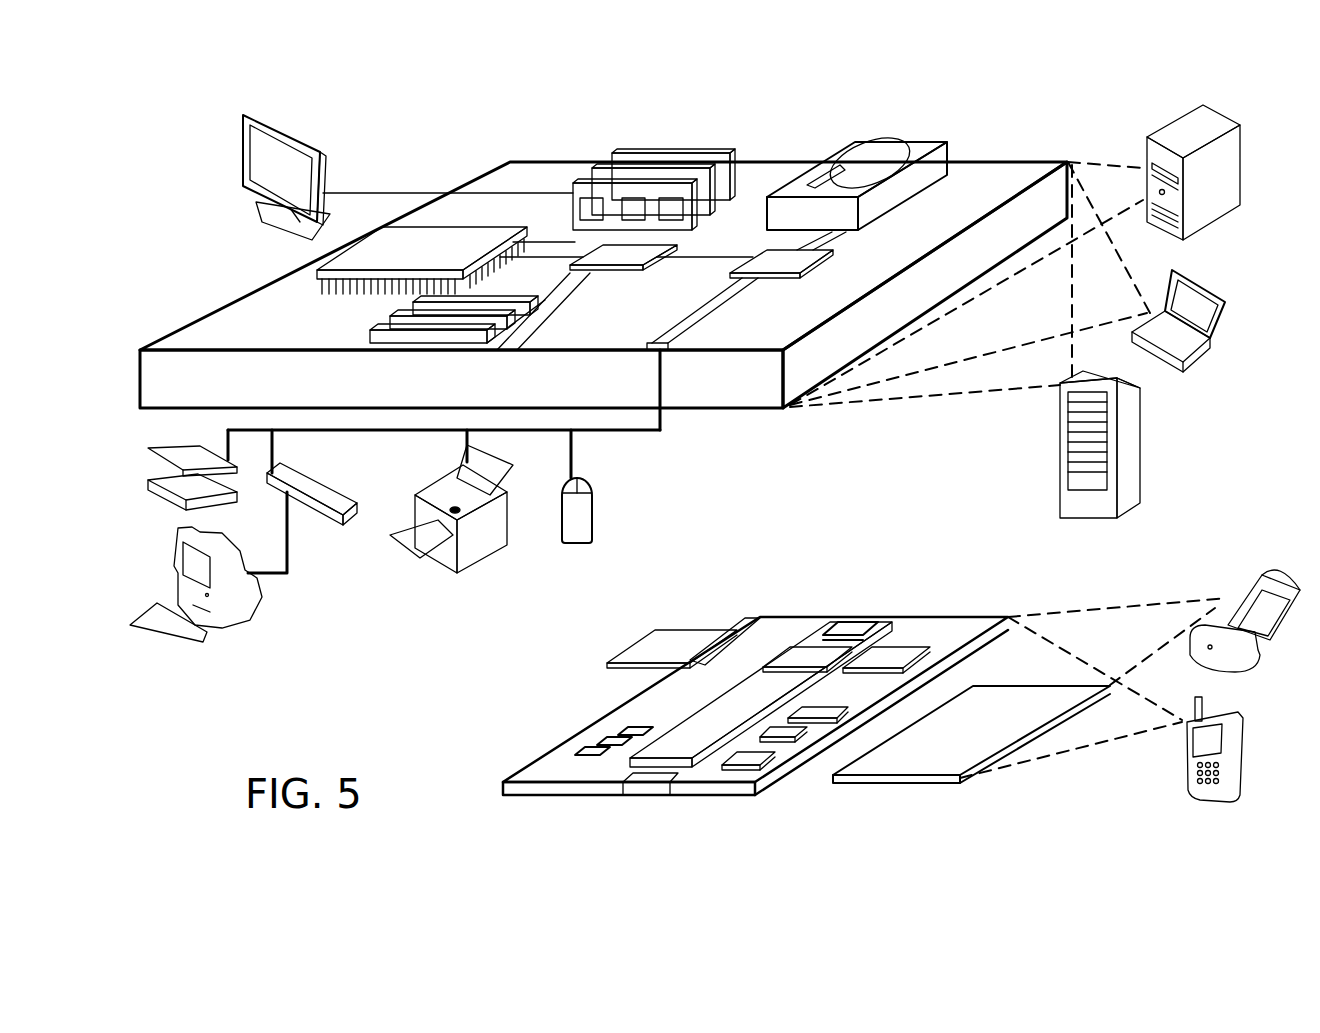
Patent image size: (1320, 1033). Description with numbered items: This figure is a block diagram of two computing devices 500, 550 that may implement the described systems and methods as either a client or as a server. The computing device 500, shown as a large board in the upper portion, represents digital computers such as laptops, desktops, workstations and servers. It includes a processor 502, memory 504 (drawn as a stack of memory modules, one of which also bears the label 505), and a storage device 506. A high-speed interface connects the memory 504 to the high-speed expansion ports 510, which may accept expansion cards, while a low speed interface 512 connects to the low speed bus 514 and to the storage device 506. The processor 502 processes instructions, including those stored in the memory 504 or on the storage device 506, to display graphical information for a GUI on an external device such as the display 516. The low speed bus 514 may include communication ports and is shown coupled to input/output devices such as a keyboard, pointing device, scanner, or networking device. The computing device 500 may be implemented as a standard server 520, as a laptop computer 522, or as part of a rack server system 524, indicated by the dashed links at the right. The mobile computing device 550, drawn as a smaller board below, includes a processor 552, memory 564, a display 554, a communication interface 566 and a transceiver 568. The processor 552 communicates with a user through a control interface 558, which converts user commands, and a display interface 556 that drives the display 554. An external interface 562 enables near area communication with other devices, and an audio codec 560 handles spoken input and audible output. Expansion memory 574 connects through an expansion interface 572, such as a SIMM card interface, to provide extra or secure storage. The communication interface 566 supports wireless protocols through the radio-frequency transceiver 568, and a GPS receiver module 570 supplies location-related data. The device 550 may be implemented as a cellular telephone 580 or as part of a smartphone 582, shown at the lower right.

The computing device 500 is at (478, 132).
The processor 502 is at (313, 282).
The memory 504 is at (640, 153).
The memory module 505 is at (600, 183).
The storage device 506 is at (863, 143).
The high-speed expansion ports 510 is at (380, 320).
The low speed interface 512 is at (770, 262).
The low speed bus 514 is at (668, 352).
The display 516 is at (262, 113).
The standard server 520 is at (1157, 130).
The laptop computer 522 is at (1186, 363).
The rack server system 524 is at (1060, 482).
The computing device 550 is at (576, 677).
The processor 552 is at (693, 748).
The display 554 is at (940, 760).
The display interface 556 is at (745, 758).
The control interface 558 is at (785, 736).
The audio codec 560 is at (823, 714).
The external interface 562 is at (650, 790).
The memory 564 is at (600, 738).
The communication interface 566 is at (800, 652).
The transceiver 568 is at (893, 655).
The GPS receiver module 570 is at (862, 622).
The expansion interface 572 is at (733, 630).
The expansion memory 574 is at (643, 635).
The cellular telephone 580 is at (1245, 572).
The smartphone 582 is at (1187, 752).